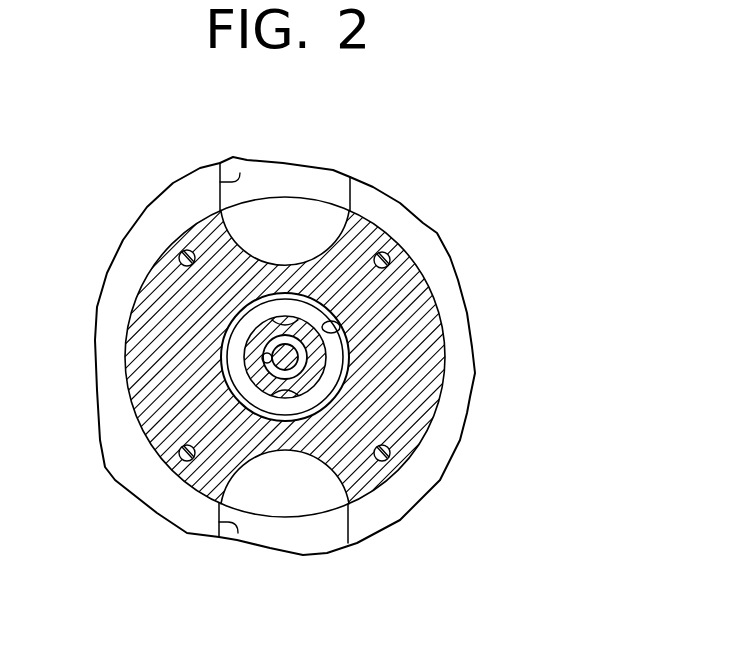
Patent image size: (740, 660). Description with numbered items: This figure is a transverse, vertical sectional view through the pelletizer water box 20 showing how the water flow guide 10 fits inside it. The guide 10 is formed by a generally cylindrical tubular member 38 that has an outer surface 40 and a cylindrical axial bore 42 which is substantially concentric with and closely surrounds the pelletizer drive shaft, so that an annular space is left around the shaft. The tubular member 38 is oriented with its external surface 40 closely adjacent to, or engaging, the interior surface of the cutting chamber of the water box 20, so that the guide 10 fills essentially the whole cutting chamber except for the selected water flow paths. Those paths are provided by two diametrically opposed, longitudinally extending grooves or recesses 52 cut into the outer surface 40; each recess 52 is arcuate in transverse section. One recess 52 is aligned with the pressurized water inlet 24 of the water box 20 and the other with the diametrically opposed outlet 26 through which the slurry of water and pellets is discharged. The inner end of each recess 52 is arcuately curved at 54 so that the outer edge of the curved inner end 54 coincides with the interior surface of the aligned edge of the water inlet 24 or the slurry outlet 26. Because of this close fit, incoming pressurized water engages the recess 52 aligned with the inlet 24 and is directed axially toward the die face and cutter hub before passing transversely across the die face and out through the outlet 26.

The water flow guide 10 is at (138, 432).
The pelletizer water box 20 is at (440, 226).
The pressurized water inlet 24 is at (238, 533).
The outlet 26 is at (240, 173).
The cylindrical tubular member 38 is at (423, 348).
The outer surface 40 is at (432, 427).
The cylindrical axial bore 42 is at (340, 330).
The grooves or recesses 52 is at (330, 240).
The arcuately curved inner end 54 is at (278, 218).